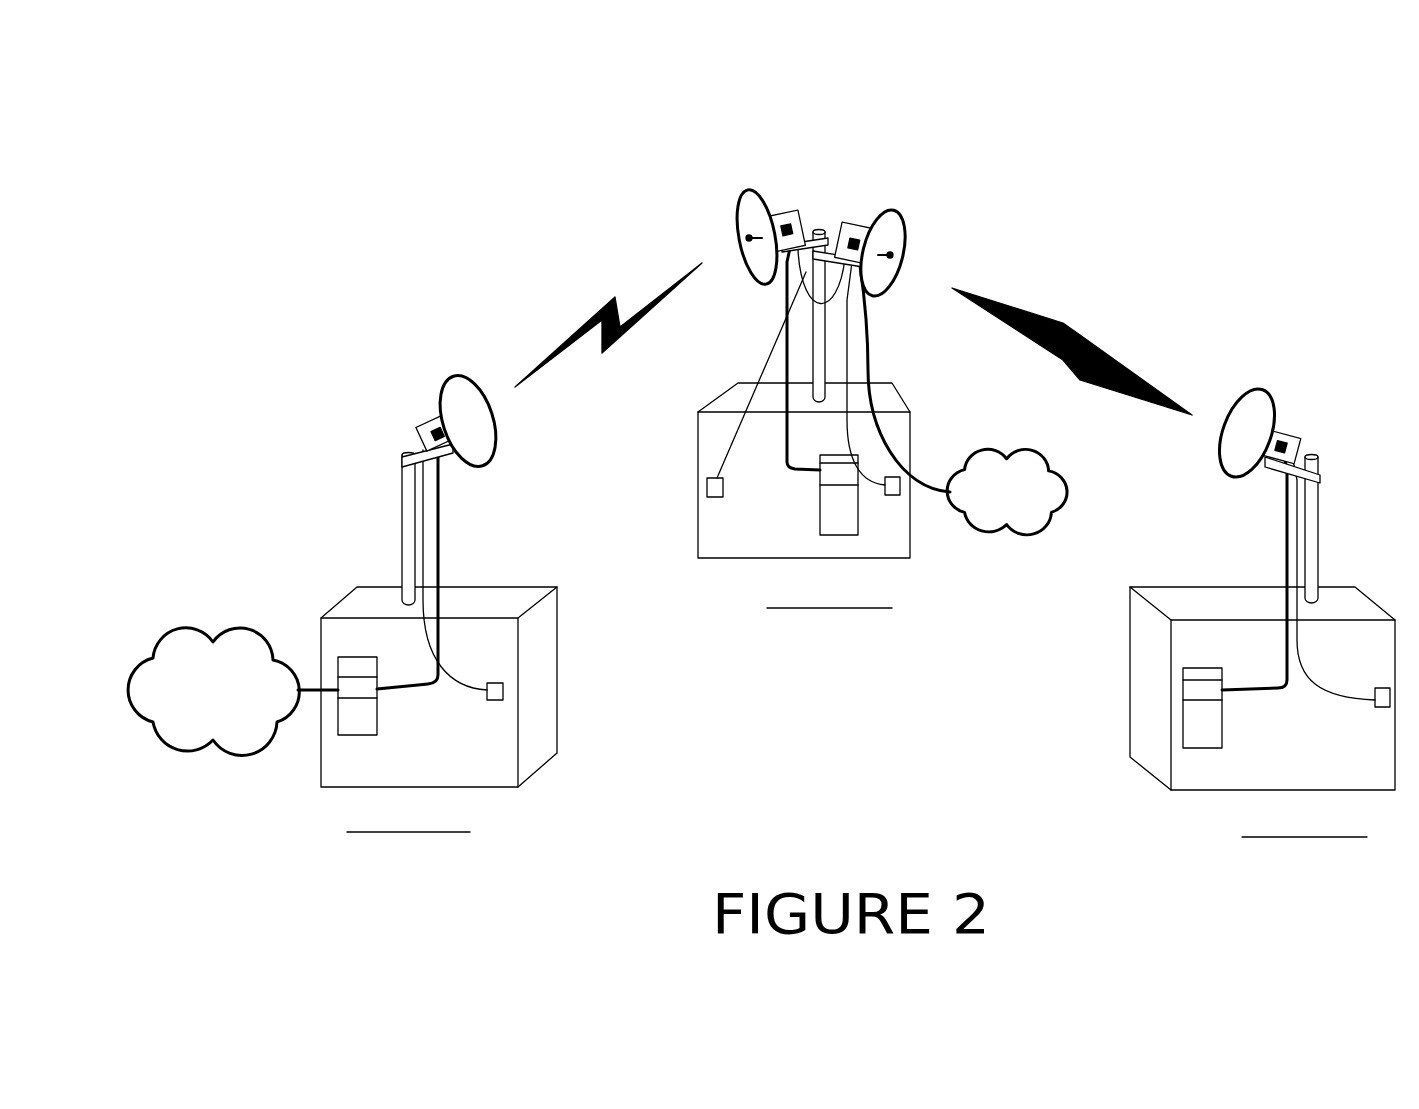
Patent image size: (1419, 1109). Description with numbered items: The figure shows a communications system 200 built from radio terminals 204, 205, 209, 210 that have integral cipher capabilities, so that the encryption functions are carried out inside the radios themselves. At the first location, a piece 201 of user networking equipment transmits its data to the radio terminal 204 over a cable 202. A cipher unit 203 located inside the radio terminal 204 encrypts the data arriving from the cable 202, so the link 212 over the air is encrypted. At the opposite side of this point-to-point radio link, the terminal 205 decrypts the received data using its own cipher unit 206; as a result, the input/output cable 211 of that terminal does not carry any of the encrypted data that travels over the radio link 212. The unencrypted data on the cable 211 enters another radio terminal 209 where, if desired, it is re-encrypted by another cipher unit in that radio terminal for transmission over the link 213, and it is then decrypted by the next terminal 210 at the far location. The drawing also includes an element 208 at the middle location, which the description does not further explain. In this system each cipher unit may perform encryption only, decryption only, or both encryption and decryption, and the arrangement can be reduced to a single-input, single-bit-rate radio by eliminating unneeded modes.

The communications system 200 is at (867, 790).
The piece of user networking equipment 201 is at (360, 693).
The cable 202 is at (443, 543).
The cipher unit 203 is at (427, 423).
The radio terminal 204 is at (437, 415).
The terminal 205 is at (777, 220).
The cipher unit 206 is at (792, 227).
The router 208 is at (848, 473).
The radio terminal 209 is at (852, 232).
The terminal 210 is at (1293, 438).
The cable 211 is at (833, 298).
The link 212 is at (594, 308).
The link 213 is at (1097, 337).